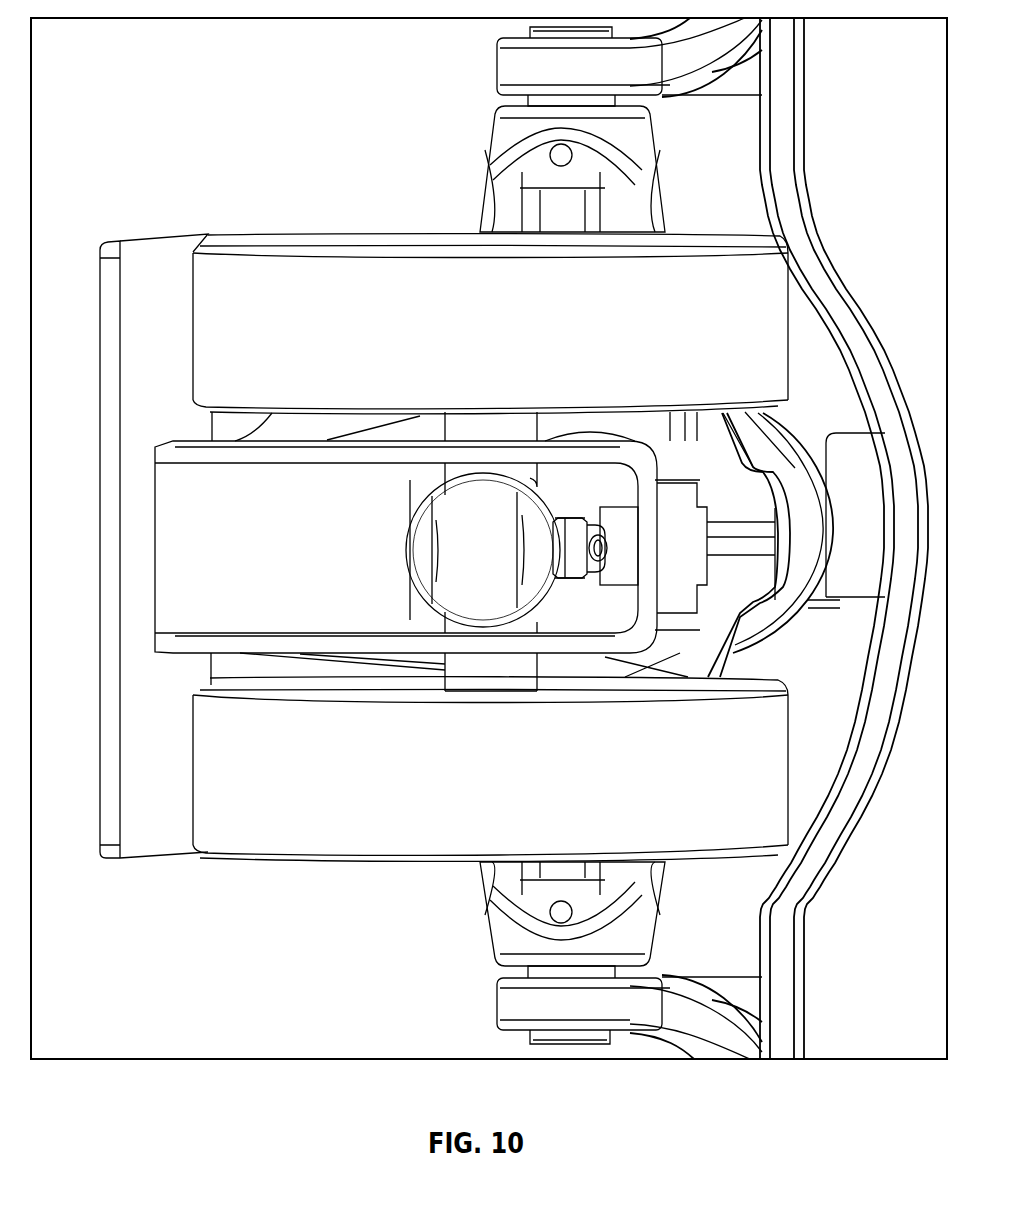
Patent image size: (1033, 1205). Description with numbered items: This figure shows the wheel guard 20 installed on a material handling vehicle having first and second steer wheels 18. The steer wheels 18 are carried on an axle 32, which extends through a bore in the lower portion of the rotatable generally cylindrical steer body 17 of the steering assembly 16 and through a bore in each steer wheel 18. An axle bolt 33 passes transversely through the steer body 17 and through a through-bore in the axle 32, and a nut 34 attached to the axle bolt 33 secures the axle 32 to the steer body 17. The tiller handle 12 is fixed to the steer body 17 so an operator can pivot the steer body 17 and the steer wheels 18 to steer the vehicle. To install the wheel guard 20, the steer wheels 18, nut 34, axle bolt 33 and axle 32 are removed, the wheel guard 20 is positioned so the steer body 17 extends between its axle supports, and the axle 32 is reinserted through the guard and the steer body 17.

The tiller handle 12 is at (450, 58).
The steering assembly 16 is at (464, 604).
The steer body 17 is at (500, 545).
The steer wheels 18 is at (287, 235).
The wheel guard 20 is at (84, 585).
The axle 32 is at (470, 433).
The axle bolt 33 is at (603, 522).
The nut 34 is at (567, 572).